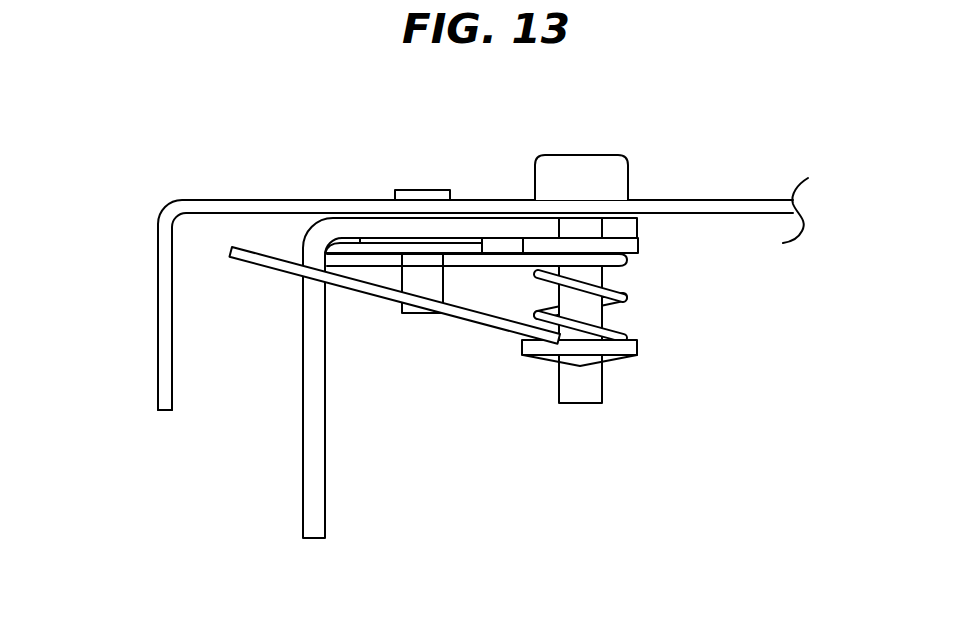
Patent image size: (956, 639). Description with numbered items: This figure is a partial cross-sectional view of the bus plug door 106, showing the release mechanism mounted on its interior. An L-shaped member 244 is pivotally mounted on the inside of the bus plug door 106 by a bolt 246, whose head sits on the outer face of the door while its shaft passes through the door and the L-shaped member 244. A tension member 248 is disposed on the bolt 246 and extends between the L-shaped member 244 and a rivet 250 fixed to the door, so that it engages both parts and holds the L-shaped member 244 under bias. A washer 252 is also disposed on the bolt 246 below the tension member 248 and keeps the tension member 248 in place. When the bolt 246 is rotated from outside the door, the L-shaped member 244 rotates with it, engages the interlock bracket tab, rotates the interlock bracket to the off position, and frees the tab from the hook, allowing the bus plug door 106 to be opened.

The bus plug door 106 is at (157, 278).
The L-shaped member 244 is at (302, 425).
The bolt 246 is at (535, 170).
The tension member 248 is at (477, 322).
The rivet 250 is at (327, 245).
The washer 252 is at (638, 345).